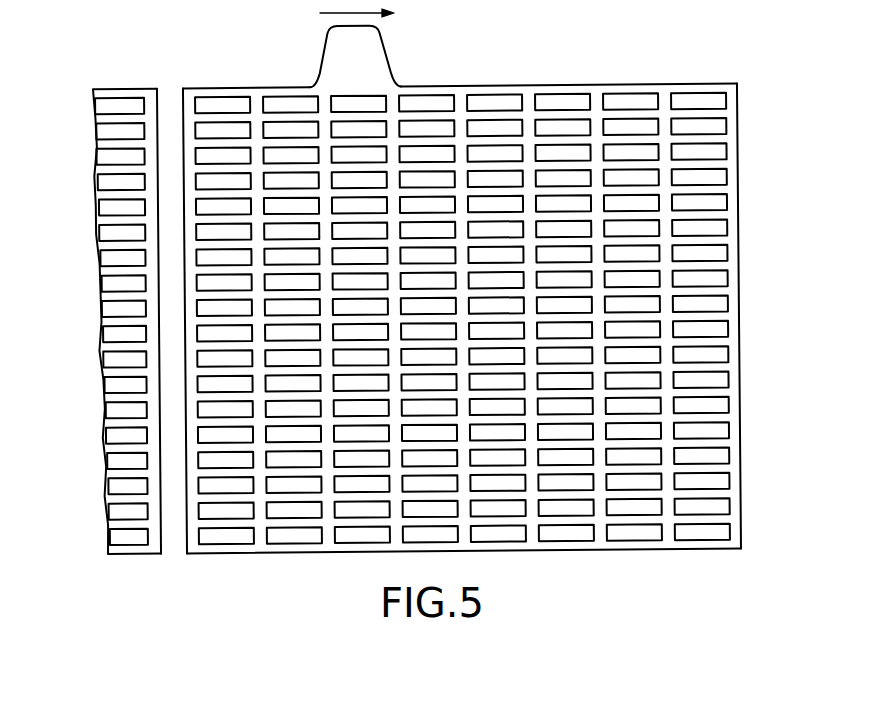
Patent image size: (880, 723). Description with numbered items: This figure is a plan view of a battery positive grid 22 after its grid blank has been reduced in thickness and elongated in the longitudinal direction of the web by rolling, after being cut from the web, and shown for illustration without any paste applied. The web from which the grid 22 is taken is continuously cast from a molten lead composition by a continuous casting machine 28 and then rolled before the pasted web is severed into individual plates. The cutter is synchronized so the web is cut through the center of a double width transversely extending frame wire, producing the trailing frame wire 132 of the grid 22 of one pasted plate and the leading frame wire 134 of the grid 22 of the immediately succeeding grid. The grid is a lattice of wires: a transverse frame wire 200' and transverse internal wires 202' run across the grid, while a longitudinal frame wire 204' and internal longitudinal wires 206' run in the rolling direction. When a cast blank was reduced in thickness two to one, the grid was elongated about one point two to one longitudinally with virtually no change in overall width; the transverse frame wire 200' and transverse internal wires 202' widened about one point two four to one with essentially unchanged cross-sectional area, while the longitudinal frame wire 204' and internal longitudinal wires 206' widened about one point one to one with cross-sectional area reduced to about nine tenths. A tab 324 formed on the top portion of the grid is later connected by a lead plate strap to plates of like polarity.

The battery positive grid 22 is at (439, 307).
The continuous casting machine 28 is at (338, 8).
The trailing frame wire 132 is at (193, 537).
The leading frame wire 134 is at (155, 538).
The transverse frame wire 200' is at (170, 61).
The transverse internal wire 202' is at (452, 63).
The longitudinal frame wire 204' is at (485, 64).
The internal longitudinal wire 206' is at (445, 319).
The tab 324 is at (377, 48).